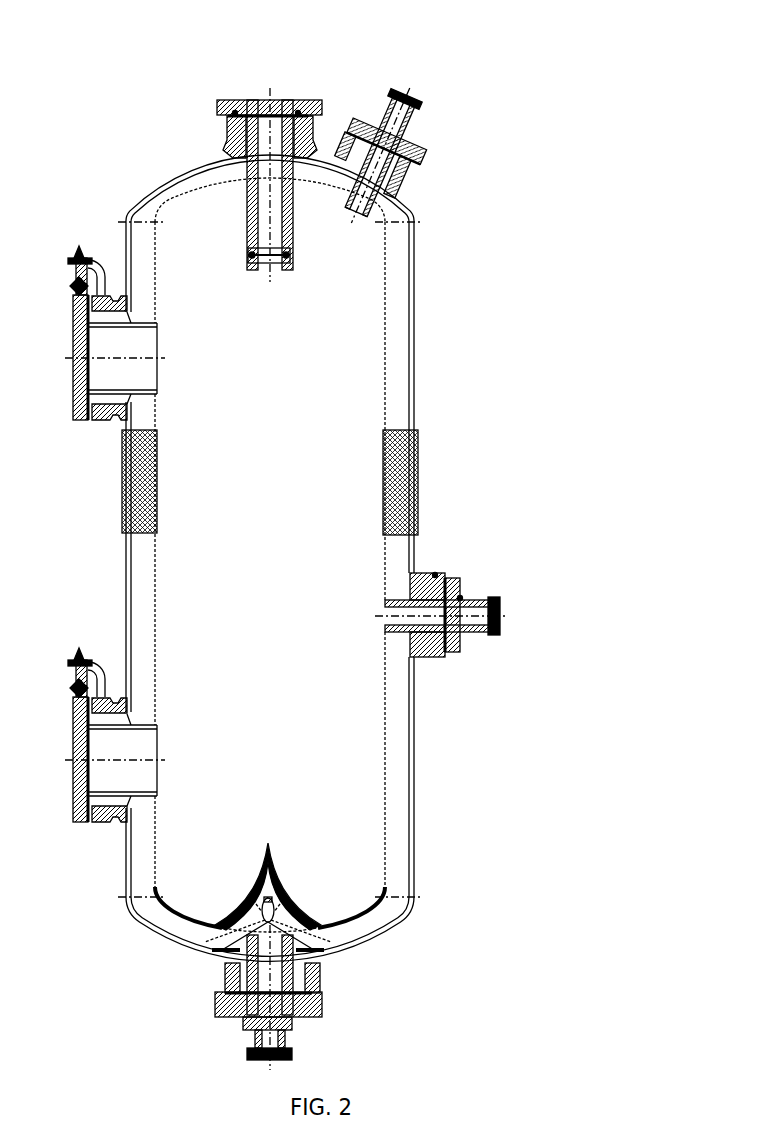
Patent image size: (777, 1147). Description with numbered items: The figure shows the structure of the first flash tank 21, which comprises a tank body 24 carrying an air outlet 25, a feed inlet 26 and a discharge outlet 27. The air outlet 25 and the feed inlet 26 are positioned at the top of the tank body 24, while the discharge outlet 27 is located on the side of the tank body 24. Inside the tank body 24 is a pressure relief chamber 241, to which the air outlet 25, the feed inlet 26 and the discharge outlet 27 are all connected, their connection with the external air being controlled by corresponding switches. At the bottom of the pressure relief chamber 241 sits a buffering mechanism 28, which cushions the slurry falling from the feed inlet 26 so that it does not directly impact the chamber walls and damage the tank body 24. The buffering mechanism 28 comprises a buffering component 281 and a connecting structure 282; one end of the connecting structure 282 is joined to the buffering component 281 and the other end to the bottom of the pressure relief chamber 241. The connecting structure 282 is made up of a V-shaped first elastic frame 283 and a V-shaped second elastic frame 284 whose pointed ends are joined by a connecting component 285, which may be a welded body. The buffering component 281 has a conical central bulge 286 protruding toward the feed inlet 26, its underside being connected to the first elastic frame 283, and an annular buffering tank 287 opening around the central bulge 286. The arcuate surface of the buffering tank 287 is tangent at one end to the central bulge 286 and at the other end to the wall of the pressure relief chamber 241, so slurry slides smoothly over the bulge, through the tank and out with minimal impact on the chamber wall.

The first flash tank 21 is at (361, 50).
The tank body 24 is at (393, 395).
The pressure relief chamber 241 is at (320, 375).
The air outlet 25 is at (412, 122).
The feed inlet 26 is at (250, 108).
The discharge outlet 27 is at (467, 630).
The buffering mechanism 28 is at (570, 822).
The buffering component 281 is at (290, 880).
The connecting structure 282 is at (493, 882).
The first elastic frame 283 is at (280, 908).
The second elastic frame 284 is at (323, 963).
The connecting component 285 is at (310, 920).
The central bulge 286 is at (262, 845).
The buffering tank 287 is at (200, 908).